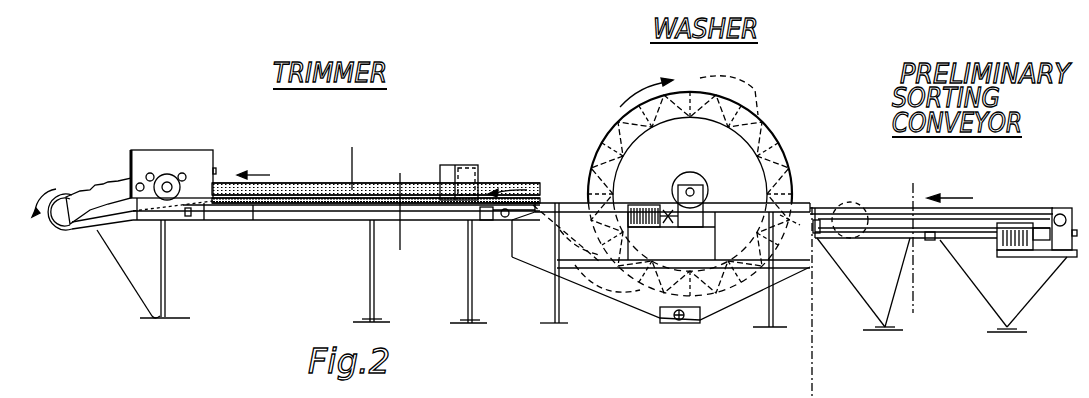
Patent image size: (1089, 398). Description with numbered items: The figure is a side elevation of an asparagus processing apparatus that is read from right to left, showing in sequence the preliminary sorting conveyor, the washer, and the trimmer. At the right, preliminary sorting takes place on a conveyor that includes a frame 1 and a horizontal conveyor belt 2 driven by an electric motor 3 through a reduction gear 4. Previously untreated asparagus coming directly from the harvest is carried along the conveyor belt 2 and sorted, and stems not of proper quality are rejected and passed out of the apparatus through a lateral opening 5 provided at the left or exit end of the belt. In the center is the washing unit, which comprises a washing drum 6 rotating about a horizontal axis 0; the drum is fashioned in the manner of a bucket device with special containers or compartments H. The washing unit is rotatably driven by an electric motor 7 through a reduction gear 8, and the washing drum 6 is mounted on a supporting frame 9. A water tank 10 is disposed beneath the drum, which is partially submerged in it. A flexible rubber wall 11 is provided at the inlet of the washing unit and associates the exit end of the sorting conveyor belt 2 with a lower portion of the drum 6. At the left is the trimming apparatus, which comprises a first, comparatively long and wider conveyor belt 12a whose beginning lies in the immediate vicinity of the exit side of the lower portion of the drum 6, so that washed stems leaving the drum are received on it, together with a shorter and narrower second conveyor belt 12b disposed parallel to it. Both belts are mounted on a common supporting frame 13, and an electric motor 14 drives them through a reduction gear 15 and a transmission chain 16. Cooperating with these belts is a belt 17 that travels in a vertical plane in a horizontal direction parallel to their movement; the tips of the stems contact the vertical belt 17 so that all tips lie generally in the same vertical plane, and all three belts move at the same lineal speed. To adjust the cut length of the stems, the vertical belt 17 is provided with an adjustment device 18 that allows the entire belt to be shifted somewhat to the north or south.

The frame 1 is at (953, 240).
The horizontal conveyor belt 2 is at (893, 207).
The electric motor 3 is at (1010, 223).
The reduction gear 4 is at (1060, 208).
The lateral opening 5 is at (847, 217).
The washing drum 6 is at (770, 150).
The electric motor 7 is at (637, 207).
The reduction gear 8 is at (682, 185).
The horizontal axis 0 is at (695, 185).
The compartments H is at (729, 88).
The supporting frame 9 is at (728, 212).
The water tank 10 is at (660, 280).
The flexible rubber wall 11 is at (800, 227).
The first conveyor belt 12a is at (303, 207).
The second conveyor belt 12b is at (336, 167).
The common supporting frame 13 is at (493, 223).
The electric motor 14 is at (173, 173).
The reduction gear 15 is at (70, 210).
The transmission chain 16 is at (70, 227).
The vertical belt 17 is at (360, 147).
The adjustment device 18 is at (447, 180).